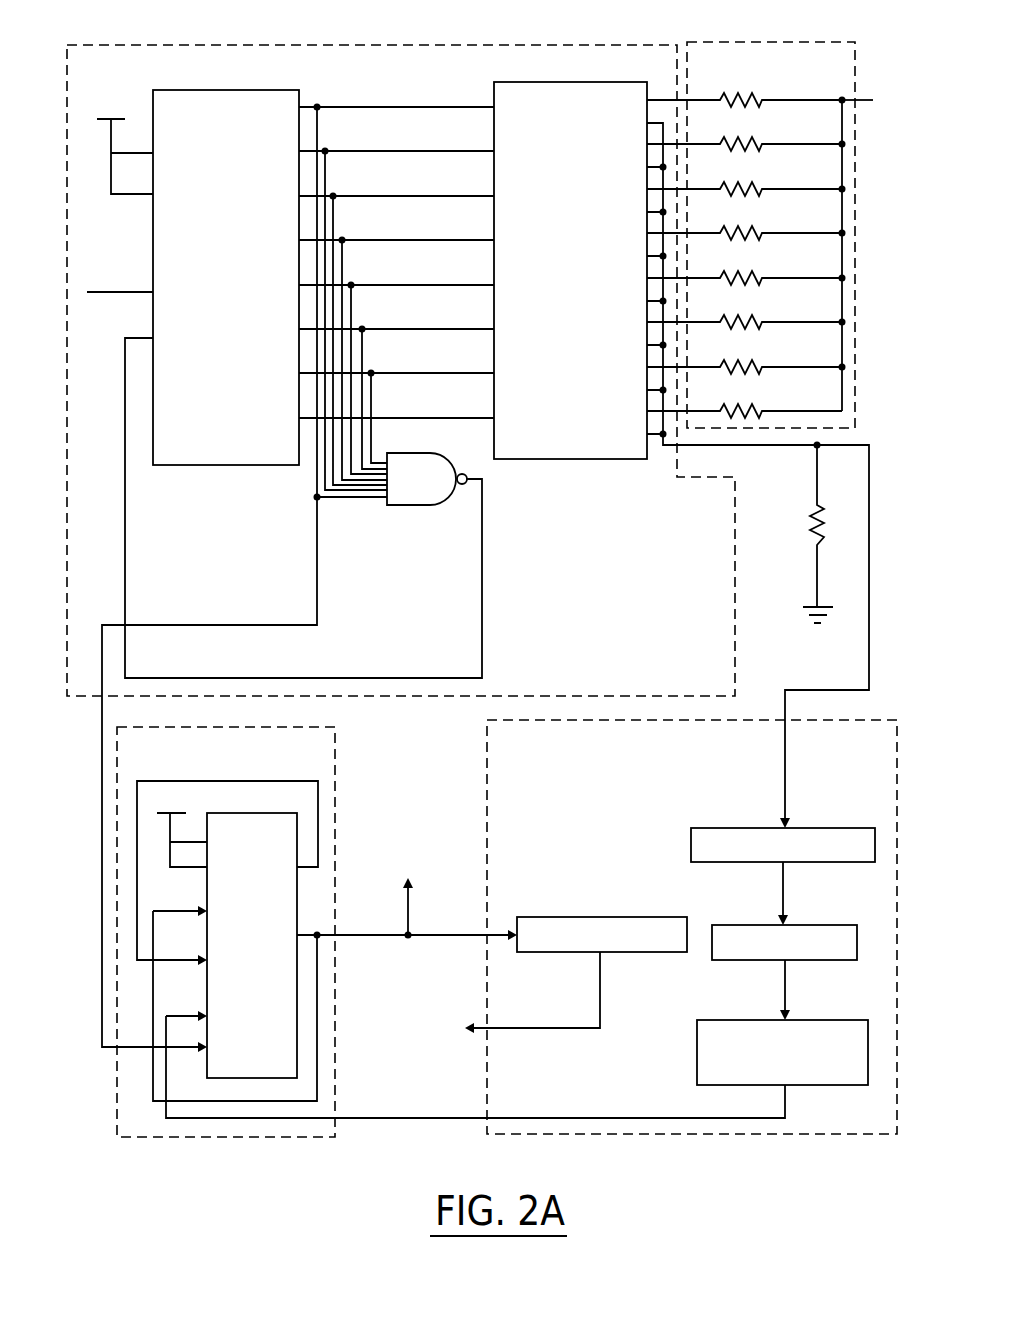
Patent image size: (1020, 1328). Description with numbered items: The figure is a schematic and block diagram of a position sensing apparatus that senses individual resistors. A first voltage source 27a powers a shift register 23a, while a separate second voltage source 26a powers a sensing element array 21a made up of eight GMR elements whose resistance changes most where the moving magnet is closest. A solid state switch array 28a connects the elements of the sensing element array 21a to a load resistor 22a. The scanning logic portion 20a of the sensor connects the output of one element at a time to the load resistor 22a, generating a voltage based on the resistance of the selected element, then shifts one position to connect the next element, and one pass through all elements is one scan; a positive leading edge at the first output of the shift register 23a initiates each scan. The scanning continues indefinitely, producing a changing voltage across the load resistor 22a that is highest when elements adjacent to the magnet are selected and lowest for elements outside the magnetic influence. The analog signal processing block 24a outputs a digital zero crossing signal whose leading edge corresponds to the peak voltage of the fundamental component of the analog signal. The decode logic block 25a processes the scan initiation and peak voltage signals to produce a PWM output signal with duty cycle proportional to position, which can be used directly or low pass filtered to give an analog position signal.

The scanning logic portion 20a is at (66, 678).
The sensing element array 21a is at (852, 41).
The load resistor RL 22a is at (813, 525).
The shift register 23a is at (225, 467).
The analog signal processing block 24a is at (487, 755).
The decode logic block 25a is at (337, 774).
The voltage source V+ 26a is at (888, 112).
The voltage source Vcc 27a is at (117, 93).
The solid state switch array 28a is at (590, 82).